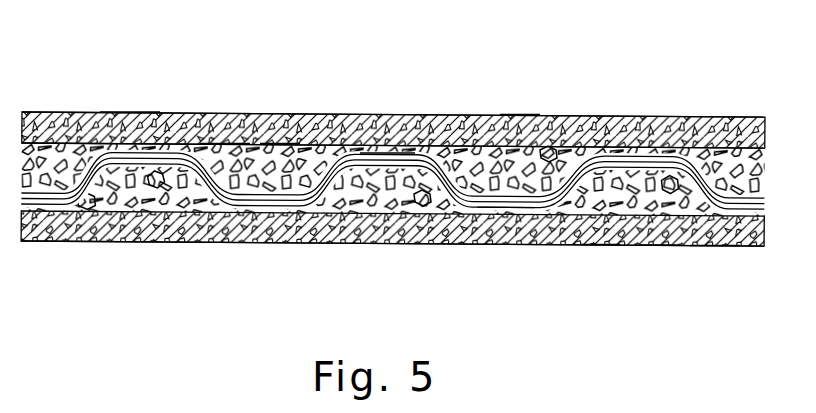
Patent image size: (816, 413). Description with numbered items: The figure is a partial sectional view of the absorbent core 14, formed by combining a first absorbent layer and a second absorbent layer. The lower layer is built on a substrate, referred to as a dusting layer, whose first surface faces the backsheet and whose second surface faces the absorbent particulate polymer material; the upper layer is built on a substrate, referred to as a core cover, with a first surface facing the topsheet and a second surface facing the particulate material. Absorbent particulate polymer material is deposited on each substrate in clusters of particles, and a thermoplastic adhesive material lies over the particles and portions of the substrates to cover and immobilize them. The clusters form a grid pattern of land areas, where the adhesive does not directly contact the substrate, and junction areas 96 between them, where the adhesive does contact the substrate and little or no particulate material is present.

The absorbent core 14 is at (393, 134).
The junction areas 96 is at (516, 214).